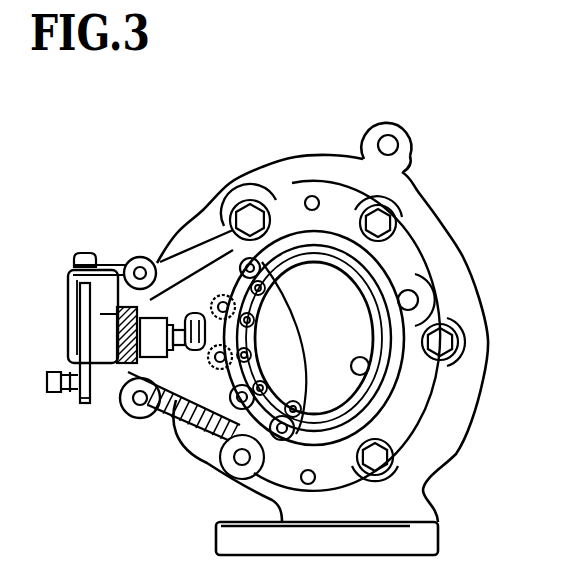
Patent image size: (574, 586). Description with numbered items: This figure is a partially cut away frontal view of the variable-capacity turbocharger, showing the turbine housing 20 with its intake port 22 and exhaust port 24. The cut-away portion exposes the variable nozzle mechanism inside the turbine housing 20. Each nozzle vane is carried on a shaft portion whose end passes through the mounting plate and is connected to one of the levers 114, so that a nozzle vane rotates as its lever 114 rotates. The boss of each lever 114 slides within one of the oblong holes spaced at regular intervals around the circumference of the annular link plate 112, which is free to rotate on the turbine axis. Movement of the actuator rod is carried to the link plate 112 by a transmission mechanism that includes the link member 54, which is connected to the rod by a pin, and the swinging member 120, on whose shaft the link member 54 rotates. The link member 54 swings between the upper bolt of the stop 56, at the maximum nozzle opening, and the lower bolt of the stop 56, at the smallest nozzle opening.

The turbine housing 20 is at (288, 172).
The intake port 22 is at (400, 538).
The exhaust port 24 is at (368, 380).
The link member 54 is at (83, 404).
The stop 56 is at (113, 258).
The link plate 112 is at (238, 305).
The lever 114 is at (252, 324).
The swinging member 120 is at (100, 378).